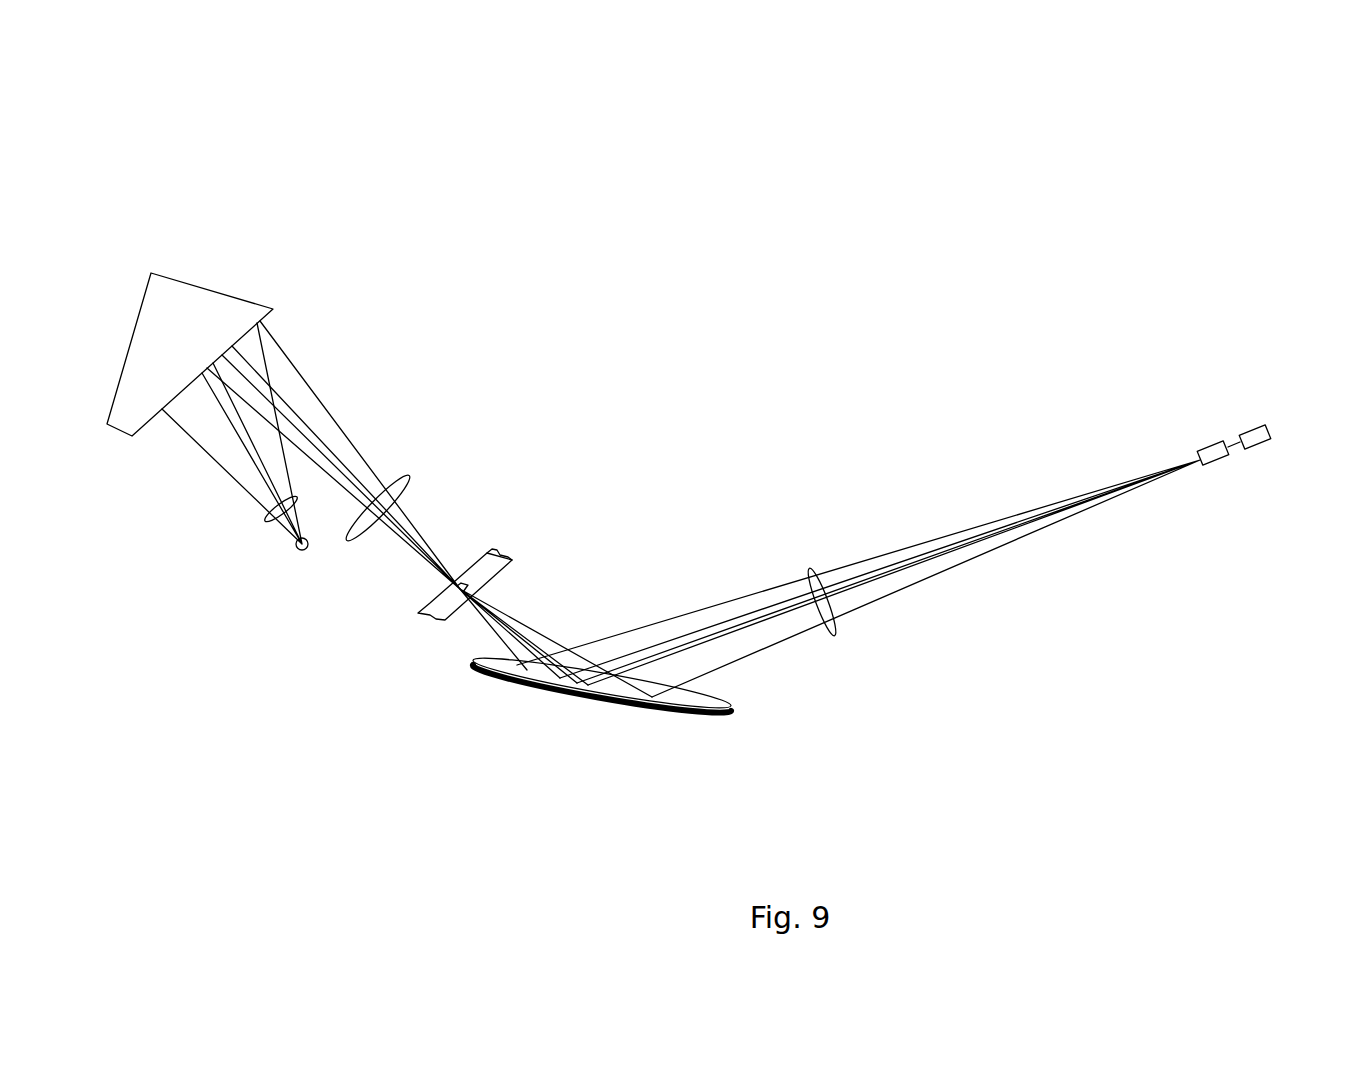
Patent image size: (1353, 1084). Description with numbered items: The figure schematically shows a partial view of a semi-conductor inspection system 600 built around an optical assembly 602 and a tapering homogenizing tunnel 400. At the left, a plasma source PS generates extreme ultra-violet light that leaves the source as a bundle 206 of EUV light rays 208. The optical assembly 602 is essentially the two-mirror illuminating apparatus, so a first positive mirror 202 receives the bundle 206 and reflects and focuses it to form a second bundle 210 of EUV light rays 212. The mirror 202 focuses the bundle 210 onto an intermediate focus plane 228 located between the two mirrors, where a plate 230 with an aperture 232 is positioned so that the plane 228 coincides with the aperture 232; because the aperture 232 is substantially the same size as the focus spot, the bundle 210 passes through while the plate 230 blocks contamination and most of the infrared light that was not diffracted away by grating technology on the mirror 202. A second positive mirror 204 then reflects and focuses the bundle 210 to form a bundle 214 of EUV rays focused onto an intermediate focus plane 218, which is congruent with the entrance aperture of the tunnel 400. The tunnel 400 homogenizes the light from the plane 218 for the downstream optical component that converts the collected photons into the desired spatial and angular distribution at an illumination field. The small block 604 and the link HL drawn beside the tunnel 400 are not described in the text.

The semi-conductor inspection system 600 is at (782, 140).
The optical assembly 602 is at (617, 390).
The positive mirror 202 is at (182, 270).
The plasma source PS is at (295, 551).
The bundle of EUV light rays 206 is at (263, 523).
The EUV light rays 208 is at (197, 449).
The bundle of EUV light rays 210 is at (337, 423).
The EUV light rays 212 is at (410, 475).
The intermediate focus plane 228 is at (496, 537).
The plate 230 is at (513, 556).
The aperture 232 is at (463, 582).
The positive mirror 204 is at (517, 695).
The bundle of EUV light rays 214 is at (812, 568).
The intermediate focus plane 218 is at (1208, 445).
The tapering homogenizing tunnel 400 is at (1200, 437).
The second detector 604 is at (1252, 425).
The hardware link HL is at (1232, 450).